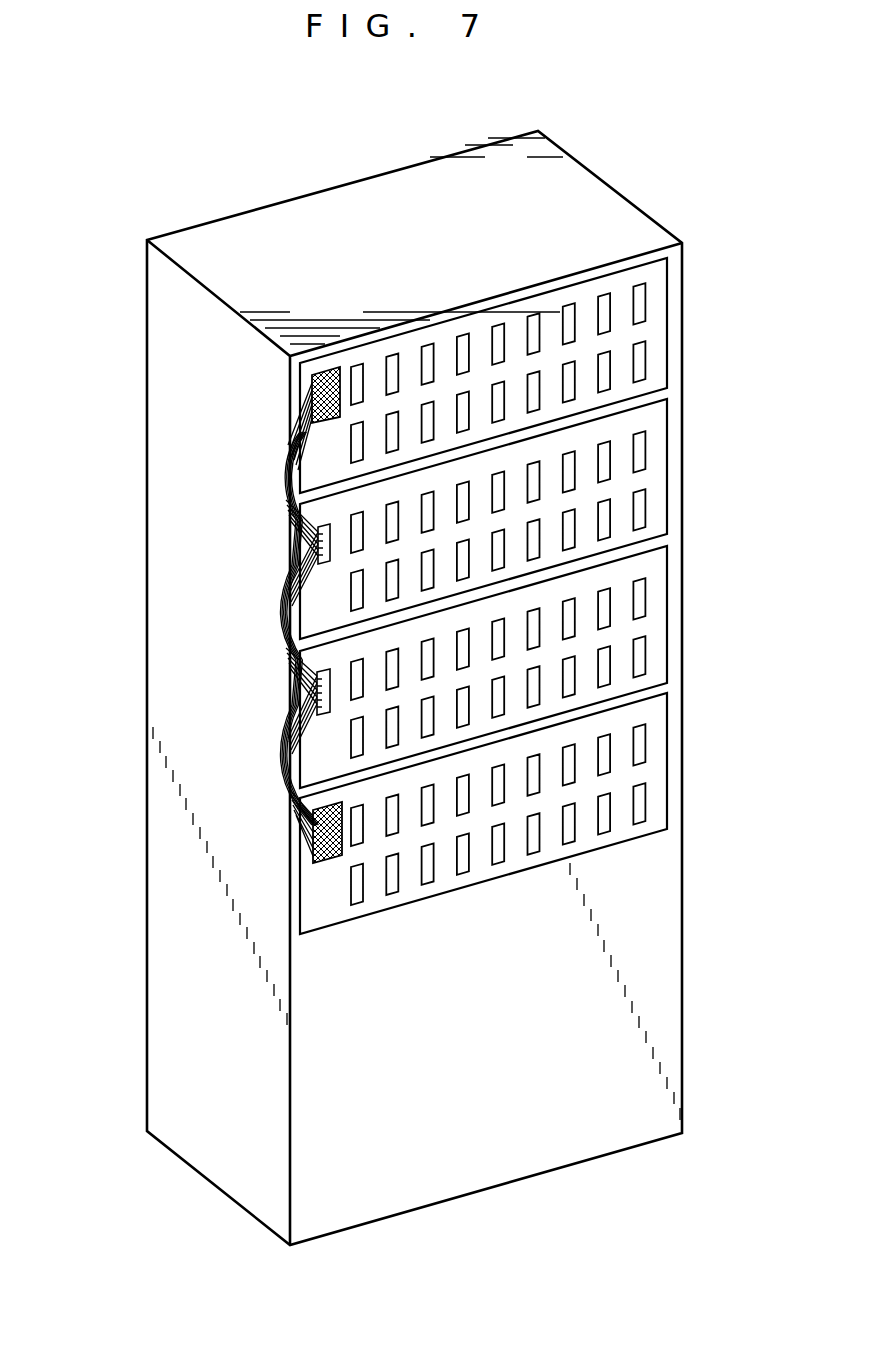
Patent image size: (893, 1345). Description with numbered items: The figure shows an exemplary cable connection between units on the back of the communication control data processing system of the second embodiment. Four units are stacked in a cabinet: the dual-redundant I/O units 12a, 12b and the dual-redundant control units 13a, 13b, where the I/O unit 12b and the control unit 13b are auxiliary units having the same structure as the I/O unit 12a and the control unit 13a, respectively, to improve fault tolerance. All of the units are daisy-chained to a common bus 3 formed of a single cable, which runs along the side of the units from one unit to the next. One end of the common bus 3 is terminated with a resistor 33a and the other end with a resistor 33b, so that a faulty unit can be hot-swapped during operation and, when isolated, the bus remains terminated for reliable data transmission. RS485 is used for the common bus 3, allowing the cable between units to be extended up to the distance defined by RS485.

The common bus 3 is at (285, 622).
The I/O unit 12a is at (667, 466).
The I/O unit 12b is at (667, 603).
The control unit 13a is at (667, 333).
The control unit 13b is at (667, 766).
The resistor 33a is at (313, 378).
The resistor 33b is at (317, 857).